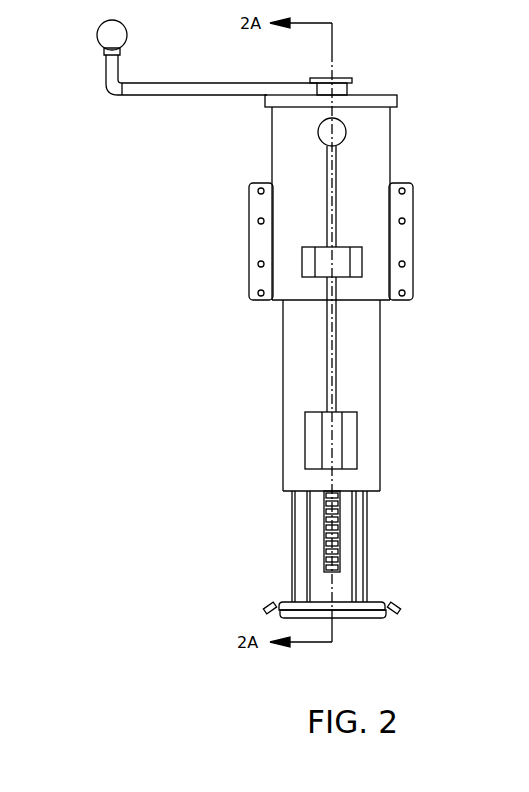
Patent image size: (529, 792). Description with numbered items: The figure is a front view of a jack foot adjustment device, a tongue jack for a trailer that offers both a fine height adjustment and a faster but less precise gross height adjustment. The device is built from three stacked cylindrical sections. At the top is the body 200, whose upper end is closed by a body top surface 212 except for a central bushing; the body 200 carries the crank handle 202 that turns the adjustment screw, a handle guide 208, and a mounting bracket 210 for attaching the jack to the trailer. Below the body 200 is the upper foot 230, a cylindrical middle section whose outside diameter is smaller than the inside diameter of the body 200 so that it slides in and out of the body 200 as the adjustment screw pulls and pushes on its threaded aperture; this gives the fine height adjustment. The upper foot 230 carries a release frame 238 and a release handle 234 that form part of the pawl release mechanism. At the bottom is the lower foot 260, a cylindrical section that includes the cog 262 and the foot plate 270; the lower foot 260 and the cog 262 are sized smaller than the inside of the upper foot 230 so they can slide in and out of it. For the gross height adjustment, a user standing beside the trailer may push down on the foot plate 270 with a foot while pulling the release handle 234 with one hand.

The body 200 is at (380, 137).
The crank handle 202 is at (107, 73).
The handle guide 208 is at (322, 265).
The mounting bracket 210 is at (258, 245).
The body top surface 212 is at (373, 100).
The upper foot 230 is at (365, 367).
The release handle 234 is at (330, 188).
The release frame 238 is at (313, 443).
The lower foot 260 is at (372, 533).
The cog 262 is at (332, 557).
The foot plate 270 is at (367, 612).